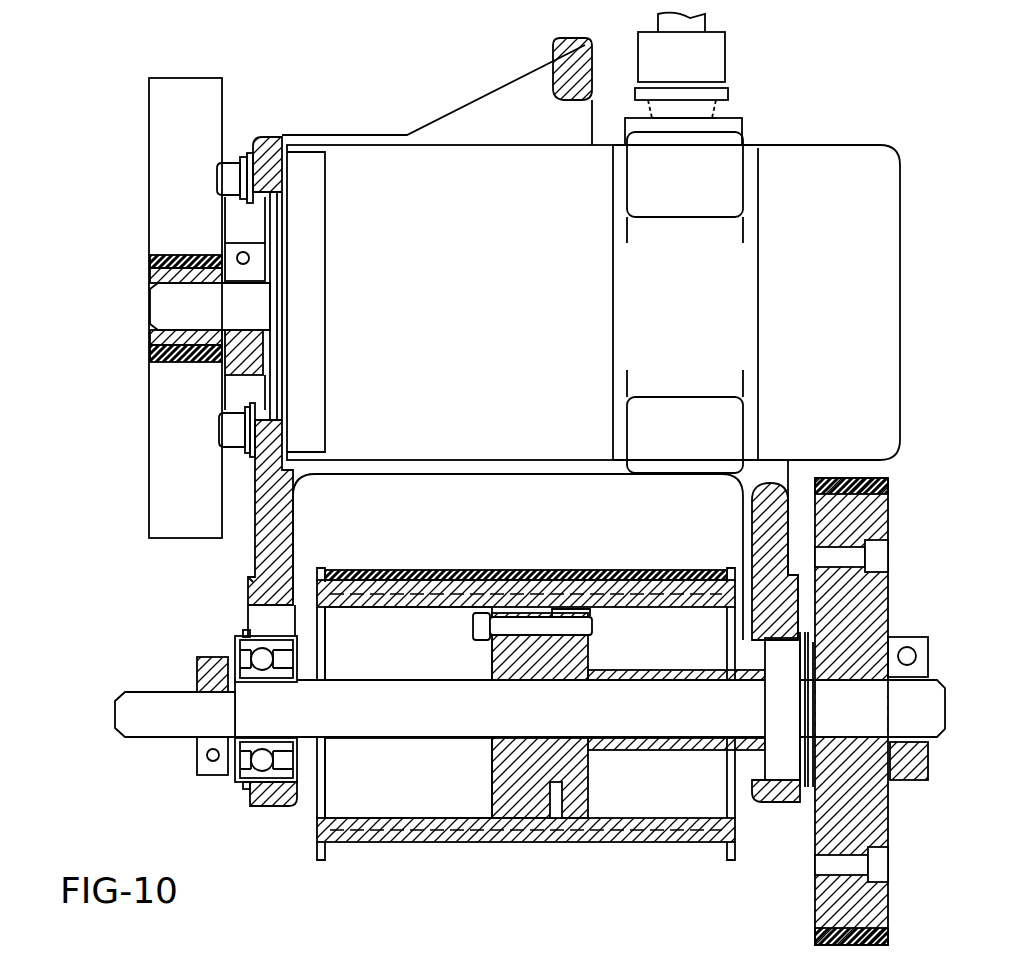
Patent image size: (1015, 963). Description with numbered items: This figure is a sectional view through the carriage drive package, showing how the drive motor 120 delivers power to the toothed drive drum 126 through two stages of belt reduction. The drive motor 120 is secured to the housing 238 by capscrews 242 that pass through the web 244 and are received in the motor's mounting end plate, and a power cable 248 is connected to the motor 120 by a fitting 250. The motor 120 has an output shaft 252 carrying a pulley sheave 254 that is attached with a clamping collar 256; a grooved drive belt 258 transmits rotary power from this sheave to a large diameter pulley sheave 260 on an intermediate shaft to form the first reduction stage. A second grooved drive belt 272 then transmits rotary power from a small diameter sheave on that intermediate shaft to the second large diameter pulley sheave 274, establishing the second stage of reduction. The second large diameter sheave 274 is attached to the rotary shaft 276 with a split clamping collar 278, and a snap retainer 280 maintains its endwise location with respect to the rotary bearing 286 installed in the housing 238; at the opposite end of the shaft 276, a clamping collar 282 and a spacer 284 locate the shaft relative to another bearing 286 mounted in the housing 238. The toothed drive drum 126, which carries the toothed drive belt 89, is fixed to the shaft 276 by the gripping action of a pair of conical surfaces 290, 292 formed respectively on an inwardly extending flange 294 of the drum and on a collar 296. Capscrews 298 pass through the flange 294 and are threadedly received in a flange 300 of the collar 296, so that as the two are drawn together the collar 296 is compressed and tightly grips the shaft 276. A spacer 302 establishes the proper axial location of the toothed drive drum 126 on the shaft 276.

The toothed drive belt 89 is at (492, 540).
The drive motor 120 is at (525, 380).
The toothed drive drum 126 is at (400, 842).
The housing 238 is at (248, 580).
The capscrews 242 is at (232, 163).
The web 244 is at (262, 138).
The power cable 248 is at (655, 18).
The fitting 250 is at (742, 68).
The output shaft 252 is at (185, 307).
The pulley sheave 254 is at (150, 347).
The clamping collar 256 is at (222, 245).
The grooved drive belt 258 is at (150, 258).
The large diameter pulley sheave 260 is at (149, 130).
The second grooved drive belt 272 is at (886, 933).
The second large diameter pulley sheave 274 is at (890, 820).
The rotary shaft 276 is at (944, 720).
The split clamping collar 278 is at (900, 637).
The snap retainer 280 is at (815, 745).
The clamping collar 282 is at (195, 665).
The spacer 284 is at (233, 772).
The bearing 286 is at (253, 790).
The conical surface 290 is at (560, 648).
The conical surface 292 is at (520, 640).
The inwardly extending flange 294 is at (500, 800).
The collar 296 is at (572, 662).
The capscrews 298 is at (472, 628).
The flange 300 is at (590, 786).
The spacer 302 is at (712, 673).